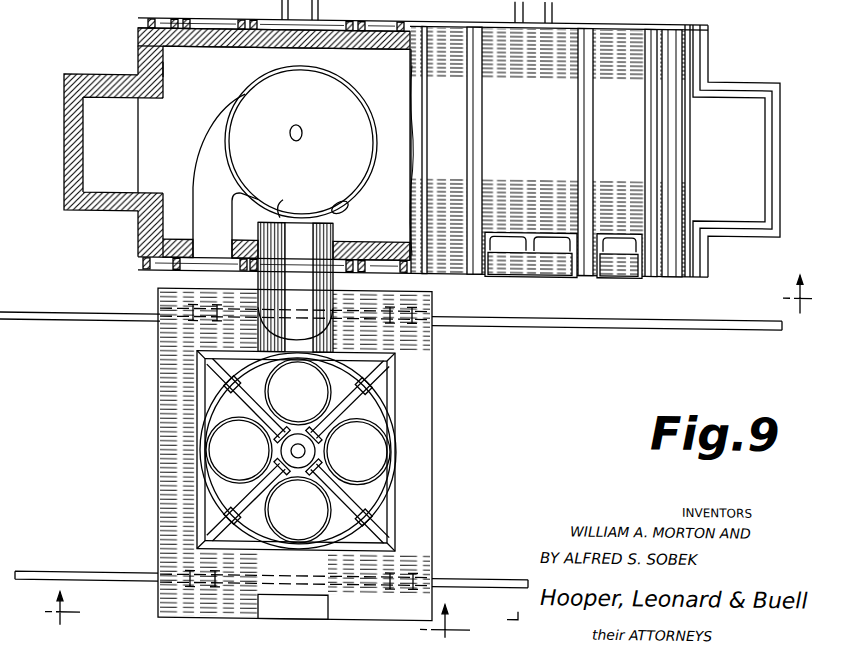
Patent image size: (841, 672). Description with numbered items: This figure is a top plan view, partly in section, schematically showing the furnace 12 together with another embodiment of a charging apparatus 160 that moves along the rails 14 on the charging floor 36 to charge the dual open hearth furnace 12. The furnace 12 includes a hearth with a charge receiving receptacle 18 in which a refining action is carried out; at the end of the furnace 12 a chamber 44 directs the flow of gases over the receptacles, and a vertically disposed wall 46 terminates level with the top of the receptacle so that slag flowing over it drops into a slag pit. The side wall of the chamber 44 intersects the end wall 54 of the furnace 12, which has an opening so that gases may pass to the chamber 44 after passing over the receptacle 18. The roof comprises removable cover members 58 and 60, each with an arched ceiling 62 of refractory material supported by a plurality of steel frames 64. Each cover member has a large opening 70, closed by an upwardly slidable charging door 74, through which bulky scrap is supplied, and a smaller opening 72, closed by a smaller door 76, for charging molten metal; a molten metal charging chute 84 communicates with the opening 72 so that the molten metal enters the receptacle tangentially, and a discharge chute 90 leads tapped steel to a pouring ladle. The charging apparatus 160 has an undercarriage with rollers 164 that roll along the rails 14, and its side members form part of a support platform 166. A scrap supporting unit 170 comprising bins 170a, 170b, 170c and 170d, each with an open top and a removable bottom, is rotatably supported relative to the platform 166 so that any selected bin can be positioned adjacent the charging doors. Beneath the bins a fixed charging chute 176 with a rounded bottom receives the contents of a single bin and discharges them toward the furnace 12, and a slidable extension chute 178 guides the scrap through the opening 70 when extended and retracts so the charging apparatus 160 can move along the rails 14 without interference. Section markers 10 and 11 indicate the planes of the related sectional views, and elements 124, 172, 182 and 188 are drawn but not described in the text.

The furnace 12 is at (70, 240).
The rails 14 is at (735, 0).
The charge receiving receptacle 18 is at (351, 97).
The charging floor 36 is at (570, 416).
The chamber 44 is at (102, 138).
The vertically disposed wall 46 is at (141, 162).
The end wall 54 is at (163, 62).
The cover member 58 is at (233, 74).
The cover member 60 is at (545, 148).
The arched ceiling 62 is at (270, 32).
The steel frames 64 is at (585, 94).
The large opening 70 is at (333, 248).
The smaller opening 72 is at (196, 240).
The charging door 74 is at (535, 271).
The smaller door 76 is at (620, 272).
The molten metal charging chute 84 is at (199, 173).
The discharge chute 90 is at (320, 7).
The conduit 124 is at (664, 8).
The charging apparatus 160 is at (447, 458).
The rollers 164 is at (428, 300).
The support platform 166 is at (432, 398).
The scrap supporting unit 170 is at (377, 388).
The bin 170a is at (296, 400).
The bin 170b is at (366, 459).
The bin 170c is at (297, 518).
The bin 170d is at (239, 459).
The ring 172 is at (355, 509).
The charging chute 176 is at (330, 342).
The slidable extension chute 178 is at (302, 202).
The seal 182 is at (348, 205).
The shaft 188 is at (303, 130).
The section line 10 is at (469, 621).
The section line 11 is at (428, 448).